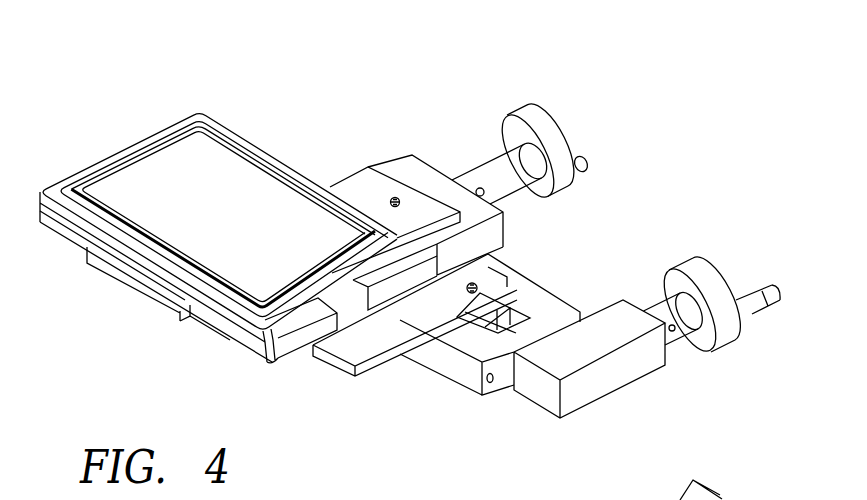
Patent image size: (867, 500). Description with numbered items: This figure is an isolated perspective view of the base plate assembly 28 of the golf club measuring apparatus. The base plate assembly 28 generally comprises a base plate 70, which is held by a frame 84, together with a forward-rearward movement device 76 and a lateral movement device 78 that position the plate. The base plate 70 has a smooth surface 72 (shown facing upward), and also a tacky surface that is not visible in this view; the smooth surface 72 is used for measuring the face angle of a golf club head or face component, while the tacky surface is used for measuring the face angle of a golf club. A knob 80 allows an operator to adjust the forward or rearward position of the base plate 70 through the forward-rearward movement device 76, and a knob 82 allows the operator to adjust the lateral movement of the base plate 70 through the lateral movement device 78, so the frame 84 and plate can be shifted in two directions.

The base plate assembly 28 is at (478, 52).
The base plate 70 is at (148, 241).
The smooth surface 72 is at (272, 185).
The forward-rearward movement device 76 is at (490, 155).
The lateral movement device 78 is at (659, 308).
The knob 80 is at (563, 127).
The knob 82 is at (717, 265).
The frame 84 is at (258, 350).